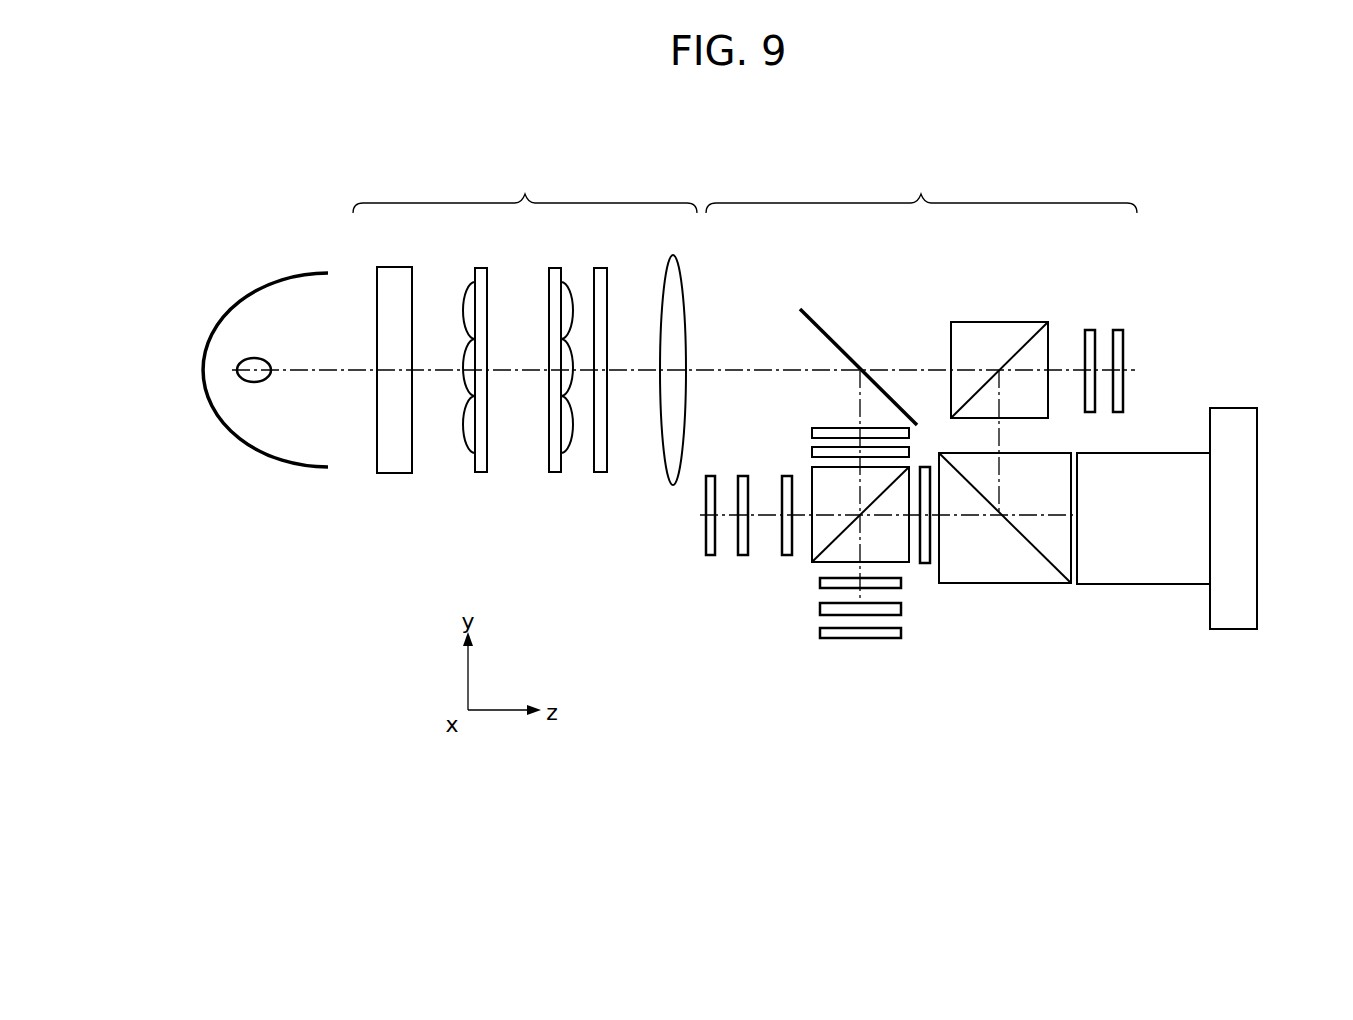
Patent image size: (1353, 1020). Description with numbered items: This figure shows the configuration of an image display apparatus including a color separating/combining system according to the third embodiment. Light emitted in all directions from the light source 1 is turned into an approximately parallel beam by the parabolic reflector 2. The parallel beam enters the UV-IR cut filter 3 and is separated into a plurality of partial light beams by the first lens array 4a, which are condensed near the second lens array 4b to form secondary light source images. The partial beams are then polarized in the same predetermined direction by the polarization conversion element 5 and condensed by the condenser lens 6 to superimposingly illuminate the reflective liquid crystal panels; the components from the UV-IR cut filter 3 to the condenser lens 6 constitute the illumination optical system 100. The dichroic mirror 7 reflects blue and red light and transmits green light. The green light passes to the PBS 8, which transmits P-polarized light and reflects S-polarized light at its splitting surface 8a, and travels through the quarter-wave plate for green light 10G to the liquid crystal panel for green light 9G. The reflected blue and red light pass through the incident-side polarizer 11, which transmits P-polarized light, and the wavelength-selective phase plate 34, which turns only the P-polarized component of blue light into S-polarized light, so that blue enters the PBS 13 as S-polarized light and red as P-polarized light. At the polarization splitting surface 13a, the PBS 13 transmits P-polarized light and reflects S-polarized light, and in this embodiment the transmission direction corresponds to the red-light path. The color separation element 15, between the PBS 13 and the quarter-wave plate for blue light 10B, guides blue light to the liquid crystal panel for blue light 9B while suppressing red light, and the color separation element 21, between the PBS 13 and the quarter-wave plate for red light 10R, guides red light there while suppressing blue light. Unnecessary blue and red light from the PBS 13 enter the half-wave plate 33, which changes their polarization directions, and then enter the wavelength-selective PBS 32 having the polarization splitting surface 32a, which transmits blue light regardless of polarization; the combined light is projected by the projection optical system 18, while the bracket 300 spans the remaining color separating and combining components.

The light source 1 is at (236, 366).
The parabolic reflector 2 is at (279, 462).
The UV-IR cut filter 3 is at (396, 463).
The first lens array 4a is at (480, 463).
The second lens array 4b is at (553, 463).
The polarization conversion element 5 is at (600, 463).
The condenser lens 6 is at (669, 447).
The dichroic mirror 7 is at (822, 332).
The PBS 8 is at (1020, 322).
The polarization splitting surface 8a is at (1005, 358).
The liquid crystal panel for blue light 9B is at (705, 535).
The liquid crystal panel for green light 9G is at (1128, 390).
The quarter-wave plate for blue light 10B is at (739, 550).
The quarter-wave plate for green light 10G is at (1090, 330).
The quarter-wave plate for red light 10R is at (893, 607).
The incident-side polarizer 11 is at (830, 429).
The PBS 13 is at (812, 483).
The polarization splitting surface 13a is at (815, 556).
The color separation element 15 is at (782, 548).
The projection optical system 18 is at (1148, 586).
The color separation element 21 is at (820, 592).
The wavelength-selective PBS 32 is at (1045, 586).
The polarization splitting surface 32a is at (1012, 545).
The half-wave plate 33 is at (926, 565).
The wavelength-selective phase plate 34 is at (812, 450).
The illumination optical system 100 is at (525, 187).
The projection optical system 300 is at (921, 187).